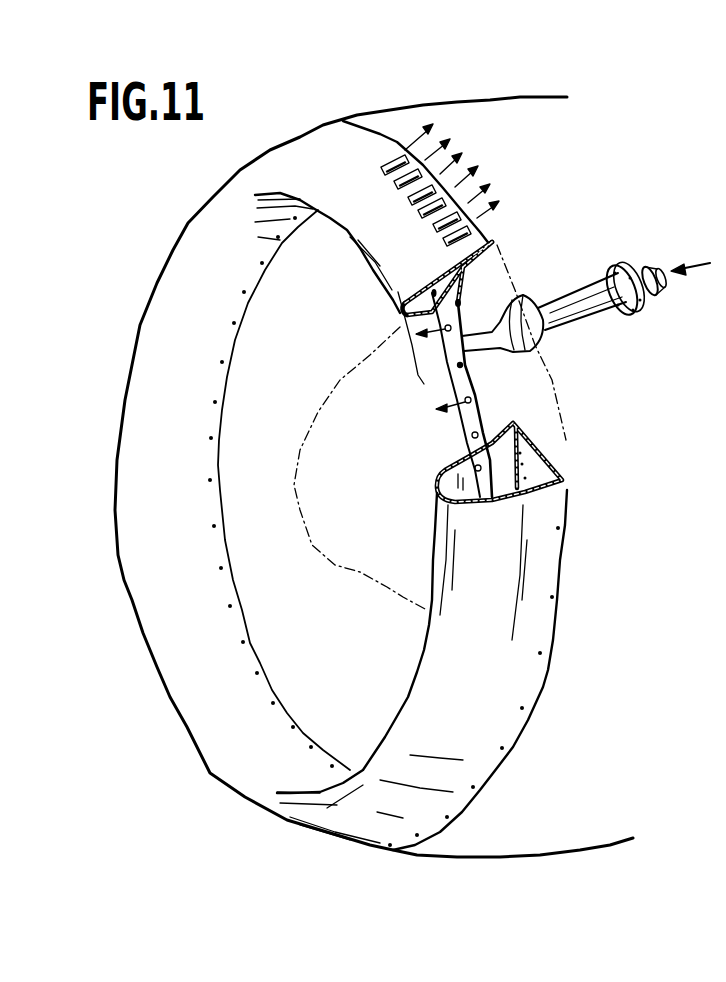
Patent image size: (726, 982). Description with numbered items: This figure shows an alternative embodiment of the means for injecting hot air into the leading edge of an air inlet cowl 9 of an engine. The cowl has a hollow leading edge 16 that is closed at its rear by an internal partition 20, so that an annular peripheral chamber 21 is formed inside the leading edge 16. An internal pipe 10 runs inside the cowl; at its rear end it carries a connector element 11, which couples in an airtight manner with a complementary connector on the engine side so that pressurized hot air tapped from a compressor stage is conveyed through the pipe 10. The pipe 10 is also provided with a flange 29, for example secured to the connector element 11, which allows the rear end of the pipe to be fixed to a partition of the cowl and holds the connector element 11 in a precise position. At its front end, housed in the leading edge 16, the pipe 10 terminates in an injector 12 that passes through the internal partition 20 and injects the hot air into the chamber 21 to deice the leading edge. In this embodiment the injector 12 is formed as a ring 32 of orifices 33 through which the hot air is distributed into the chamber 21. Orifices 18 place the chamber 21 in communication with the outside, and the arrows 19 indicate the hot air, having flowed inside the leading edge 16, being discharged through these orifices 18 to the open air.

The air inlet cowl 9 is at (374, 450).
The internal pipe 10 is at (583, 321).
The connector element 11 is at (674, 324).
The injector 12 is at (535, 350).
The hollow leading edge 16 is at (237, 526).
The orifices 18 is at (397, 195).
The arrows 19 is at (464, 167).
The internal partition 20 is at (512, 347).
The annular peripheral chamber 21 is at (422, 666).
The flange 29 is at (626, 243).
The ring 32 is at (431, 393).
The orifices 33 is at (427, 398).